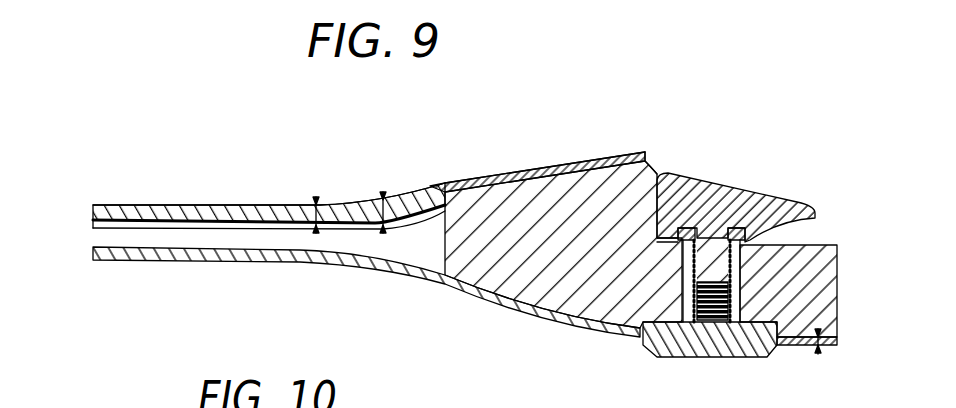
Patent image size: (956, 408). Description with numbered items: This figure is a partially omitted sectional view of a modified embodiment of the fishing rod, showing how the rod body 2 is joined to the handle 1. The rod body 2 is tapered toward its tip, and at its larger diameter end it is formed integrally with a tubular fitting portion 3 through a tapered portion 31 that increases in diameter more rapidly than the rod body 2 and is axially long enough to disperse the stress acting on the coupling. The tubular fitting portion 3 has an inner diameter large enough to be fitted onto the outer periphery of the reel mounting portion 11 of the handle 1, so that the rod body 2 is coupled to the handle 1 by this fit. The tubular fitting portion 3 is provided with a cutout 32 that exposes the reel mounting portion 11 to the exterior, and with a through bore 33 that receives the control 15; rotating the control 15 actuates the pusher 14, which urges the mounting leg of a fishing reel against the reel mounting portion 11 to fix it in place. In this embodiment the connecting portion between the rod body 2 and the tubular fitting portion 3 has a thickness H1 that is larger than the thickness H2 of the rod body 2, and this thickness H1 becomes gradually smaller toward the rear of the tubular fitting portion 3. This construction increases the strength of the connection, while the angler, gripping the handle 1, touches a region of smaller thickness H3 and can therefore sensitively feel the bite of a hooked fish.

The handle 1 is at (597, 303).
The rod body 2 is at (189, 205).
The tubular fitting portion 3 is at (463, 182).
The tapered portion 31 is at (492, 172).
The cutout 32 is at (646, 153).
The pusher 14 is at (732, 194).
The reel mounting portion 11 is at (822, 248).
The control 15 is at (708, 350).
The through bore 33 is at (764, 352).
The thickness of connecting portion H1 is at (383, 200).
The thickness of rod body H2 is at (313, 207).
The smaller thickness H3 is at (818, 354).